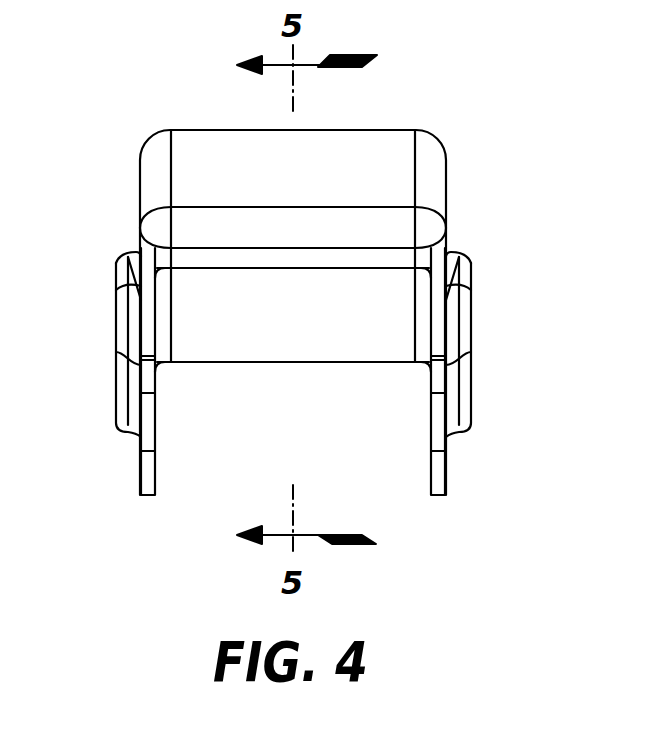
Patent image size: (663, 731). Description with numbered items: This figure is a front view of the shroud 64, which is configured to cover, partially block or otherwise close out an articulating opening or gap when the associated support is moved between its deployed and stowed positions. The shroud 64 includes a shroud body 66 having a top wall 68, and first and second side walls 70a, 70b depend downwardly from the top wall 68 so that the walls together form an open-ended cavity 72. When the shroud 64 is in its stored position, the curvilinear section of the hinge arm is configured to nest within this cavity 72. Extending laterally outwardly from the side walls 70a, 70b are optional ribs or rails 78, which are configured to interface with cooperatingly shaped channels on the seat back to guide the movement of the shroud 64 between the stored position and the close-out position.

The shroud 64 is at (465, 177).
The shroud body 66 is at (140, 232).
The top wall 68 is at (222, 142).
The first side wall 70a is at (141, 467).
The second side wall 70b is at (446, 467).
The open-ended cavity 72 is at (357, 451).
The ribs or rails 78 is at (116, 362).